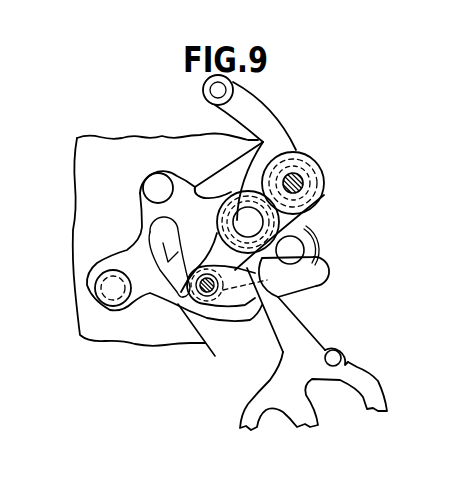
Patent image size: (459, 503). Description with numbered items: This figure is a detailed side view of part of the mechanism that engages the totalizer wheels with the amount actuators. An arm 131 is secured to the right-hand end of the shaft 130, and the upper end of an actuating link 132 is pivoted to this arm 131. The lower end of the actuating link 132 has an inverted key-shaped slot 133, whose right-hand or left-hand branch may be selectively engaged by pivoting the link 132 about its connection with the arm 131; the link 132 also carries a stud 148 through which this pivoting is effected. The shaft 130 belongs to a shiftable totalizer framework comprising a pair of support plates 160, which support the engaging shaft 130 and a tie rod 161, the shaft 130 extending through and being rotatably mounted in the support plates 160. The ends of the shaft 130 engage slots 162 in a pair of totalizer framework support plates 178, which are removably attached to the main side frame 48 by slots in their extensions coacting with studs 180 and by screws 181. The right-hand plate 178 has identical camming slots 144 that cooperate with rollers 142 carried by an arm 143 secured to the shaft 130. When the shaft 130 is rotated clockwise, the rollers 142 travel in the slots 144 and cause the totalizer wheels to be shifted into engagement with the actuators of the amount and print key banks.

The main side frame 48 is at (124, 137).
The shaft 130 is at (240, 166).
The arm 131 is at (199, 248).
The actuating link 132 is at (280, 352).
The inverted key-shaped slot 133 is at (278, 410).
The rollers 142 is at (258, 318).
The arm 143 is at (311, 275).
The camming slots 144 is at (178, 306).
The stud 148 is at (342, 357).
The support plates 160 is at (138, 242).
The tie rod 161 is at (290, 250).
The slots 162 is at (278, 298).
The totalizer framework support plates 178 is at (313, 166).
The studs 180 is at (95, 292).
The screws 181 is at (145, 184).